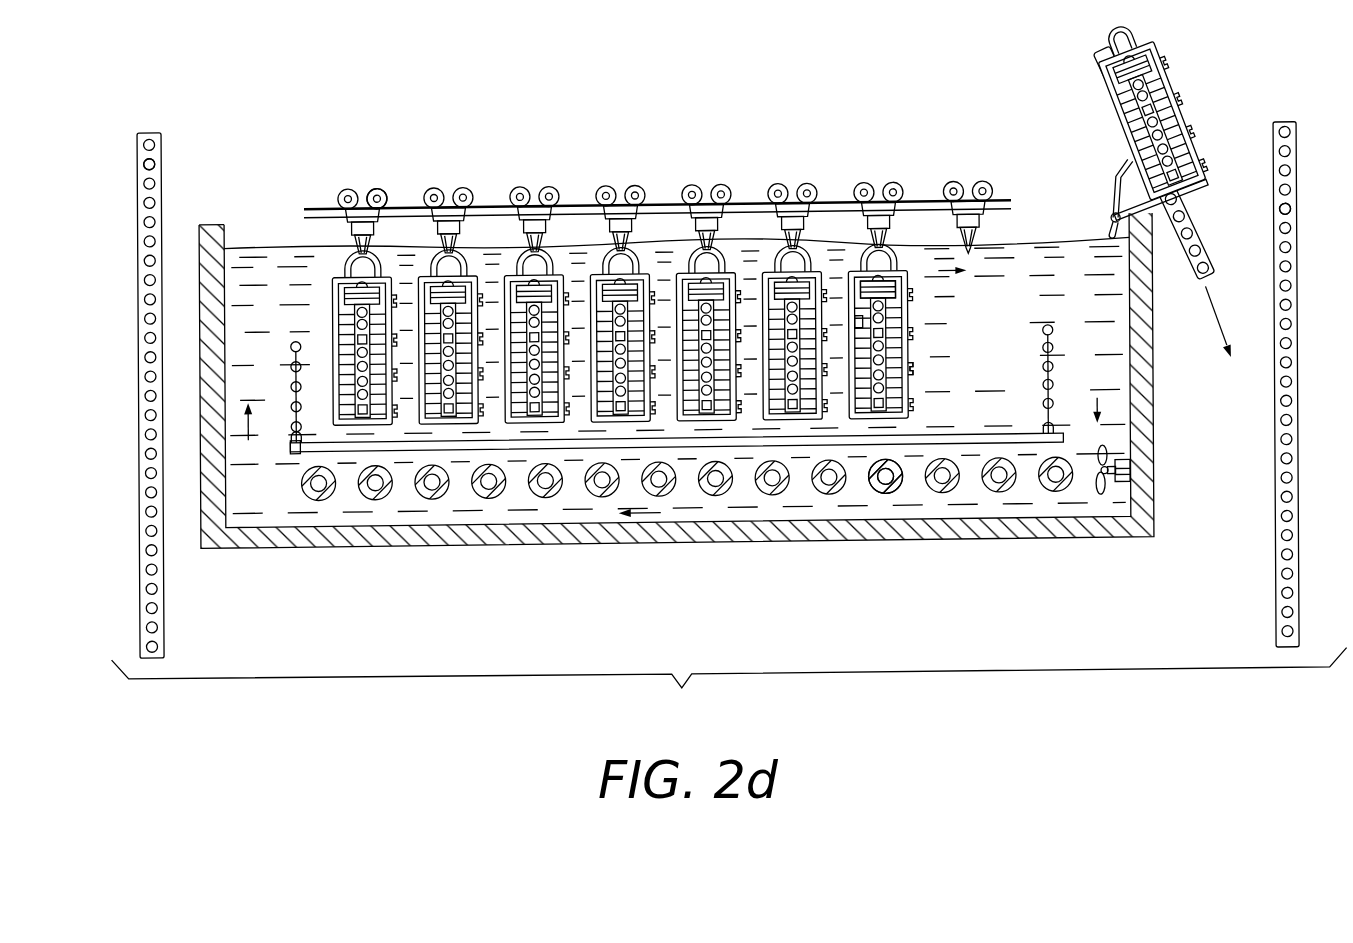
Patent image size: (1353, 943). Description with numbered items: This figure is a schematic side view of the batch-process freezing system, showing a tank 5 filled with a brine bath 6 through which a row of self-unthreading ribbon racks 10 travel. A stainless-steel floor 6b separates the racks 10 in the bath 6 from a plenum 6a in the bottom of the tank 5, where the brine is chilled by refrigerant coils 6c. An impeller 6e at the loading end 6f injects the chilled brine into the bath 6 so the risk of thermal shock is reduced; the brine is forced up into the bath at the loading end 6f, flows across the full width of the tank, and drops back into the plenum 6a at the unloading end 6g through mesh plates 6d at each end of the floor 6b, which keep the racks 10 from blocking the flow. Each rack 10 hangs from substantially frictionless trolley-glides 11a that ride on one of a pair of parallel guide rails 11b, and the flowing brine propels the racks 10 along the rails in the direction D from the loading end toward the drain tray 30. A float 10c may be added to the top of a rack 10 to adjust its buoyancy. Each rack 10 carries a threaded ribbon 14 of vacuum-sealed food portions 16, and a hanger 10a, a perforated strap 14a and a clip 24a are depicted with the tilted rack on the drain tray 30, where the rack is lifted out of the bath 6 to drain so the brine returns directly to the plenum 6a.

The tank 5 is at (1170, 494).
The brine bath 6 is at (997, 393).
The plenum 6a is at (976, 494).
The stainless-steel floor 6b is at (300, 446).
The refrigerant coils 6c is at (880, 494).
The mesh plates 6d is at (1058, 383).
The impeller 6e is at (1095, 497).
The loading end of the bath 6f is at (288, 210).
The unloading end of the bath 6g is at (1094, 231).
The self-unthreading ribbon rack 10 is at (593, 408).
The hanger 10a is at (777, 257).
The float 10c is at (863, 288).
The trolley-glides 11a is at (371, 186).
The guide rails 11b is at (579, 203).
The ribbon 14 is at (135, 152).
The perforated strap 14a is at (1172, 201).
The vacuum-sealed food portions 16 is at (156, 157).
The clip 24a is at (916, 340).
The drain tray 30 is at (1092, 103).
The direction of movement D is at (939, 274).